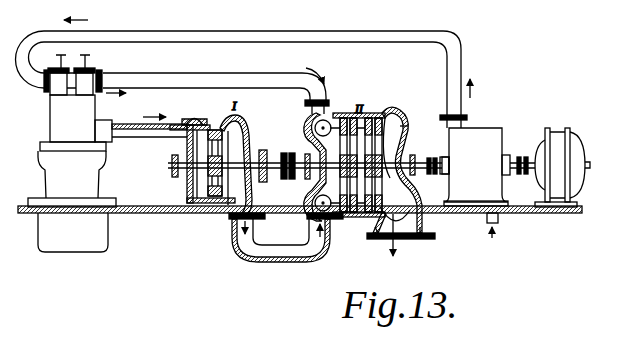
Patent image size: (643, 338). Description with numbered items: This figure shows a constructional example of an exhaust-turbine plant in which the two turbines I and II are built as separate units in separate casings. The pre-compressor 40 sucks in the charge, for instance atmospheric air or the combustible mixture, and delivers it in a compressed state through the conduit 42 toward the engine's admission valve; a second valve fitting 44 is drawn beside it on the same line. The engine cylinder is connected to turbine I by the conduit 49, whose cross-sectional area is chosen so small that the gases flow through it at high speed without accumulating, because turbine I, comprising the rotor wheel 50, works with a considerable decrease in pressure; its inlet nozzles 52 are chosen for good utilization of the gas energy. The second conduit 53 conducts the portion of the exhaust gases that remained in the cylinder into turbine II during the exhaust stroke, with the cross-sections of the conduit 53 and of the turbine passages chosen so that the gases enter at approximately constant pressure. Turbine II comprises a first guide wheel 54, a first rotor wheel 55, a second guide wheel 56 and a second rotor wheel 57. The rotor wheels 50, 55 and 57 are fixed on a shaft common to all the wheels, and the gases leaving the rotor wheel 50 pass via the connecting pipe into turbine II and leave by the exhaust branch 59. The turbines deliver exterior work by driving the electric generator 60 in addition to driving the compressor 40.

The pre-compressor 40 is at (479, 138).
The conduit 42 is at (57, 70).
The valve 44 is at (90, 58).
The conduit 49 is at (131, 137).
The rotor wheel 50 is at (240, 127).
The inlet nozzles 52 is at (199, 118).
The second conduit 53 is at (258, 62).
The first guide wheel 54 is at (333, 118).
The first rotor wheel 55 is at (352, 218).
The second guide wheel 56 is at (380, 112).
The second rotor wheel 57 is at (404, 127).
The exhaust branch 59 is at (414, 240).
The electric generator 60 is at (555, 142).